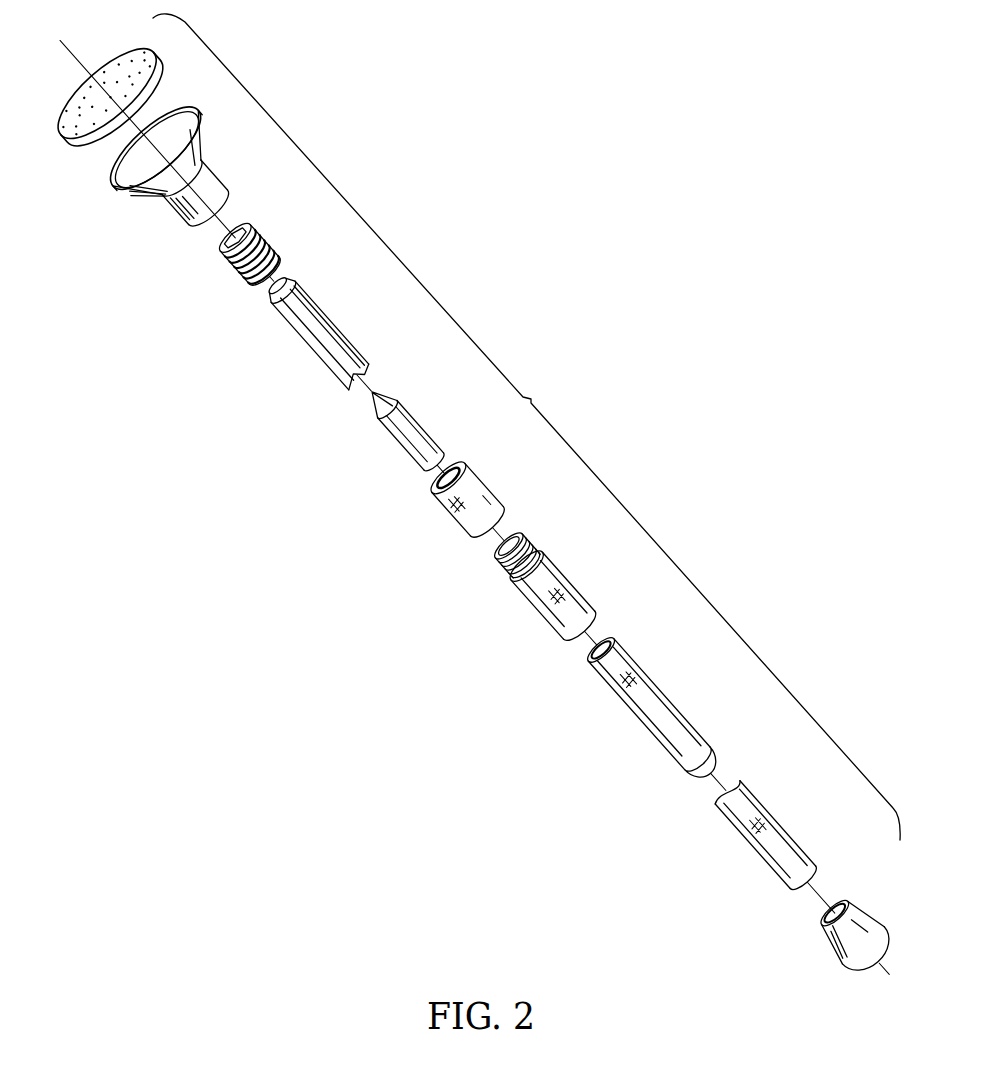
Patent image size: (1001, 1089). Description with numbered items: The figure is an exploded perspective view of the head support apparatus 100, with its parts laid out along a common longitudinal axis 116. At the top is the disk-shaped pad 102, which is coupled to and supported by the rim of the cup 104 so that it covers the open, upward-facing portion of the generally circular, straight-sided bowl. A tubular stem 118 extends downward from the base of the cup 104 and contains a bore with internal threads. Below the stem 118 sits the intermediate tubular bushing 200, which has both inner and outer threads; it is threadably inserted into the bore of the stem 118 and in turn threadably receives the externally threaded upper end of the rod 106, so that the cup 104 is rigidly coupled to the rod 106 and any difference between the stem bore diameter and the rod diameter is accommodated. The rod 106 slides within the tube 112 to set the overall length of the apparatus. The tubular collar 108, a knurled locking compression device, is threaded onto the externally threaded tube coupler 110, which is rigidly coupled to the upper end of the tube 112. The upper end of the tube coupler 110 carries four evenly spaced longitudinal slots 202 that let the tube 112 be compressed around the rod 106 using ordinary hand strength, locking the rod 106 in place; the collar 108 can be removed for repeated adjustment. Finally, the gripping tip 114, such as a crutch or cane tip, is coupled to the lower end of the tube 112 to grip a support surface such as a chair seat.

The head support apparatus 100 is at (533, 398).
The pad 102 is at (136, 80).
The cup 104 is at (197, 153).
The rod 106 is at (323, 338).
The collar 108 is at (477, 488).
The tube coupler 110 is at (563, 610).
The tube 112 is at (670, 742).
The tip 114 is at (860, 927).
The longitudinal axis 116 is at (820, 900).
The stem 118 is at (183, 208).
The bushing 200 is at (283, 255).
The longitudinal slots 202 is at (535, 569).